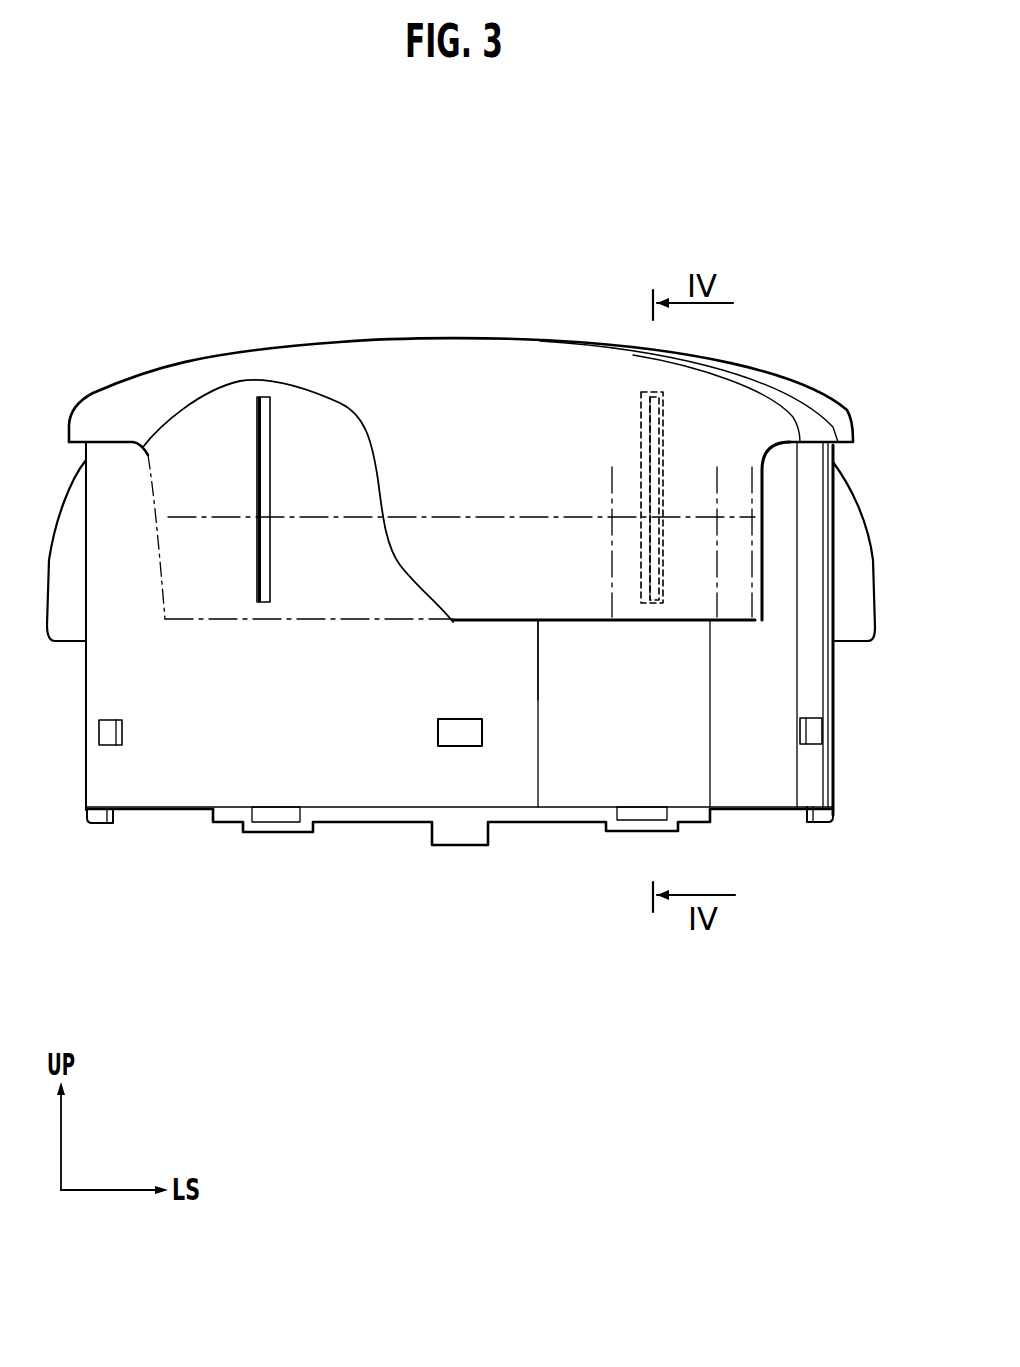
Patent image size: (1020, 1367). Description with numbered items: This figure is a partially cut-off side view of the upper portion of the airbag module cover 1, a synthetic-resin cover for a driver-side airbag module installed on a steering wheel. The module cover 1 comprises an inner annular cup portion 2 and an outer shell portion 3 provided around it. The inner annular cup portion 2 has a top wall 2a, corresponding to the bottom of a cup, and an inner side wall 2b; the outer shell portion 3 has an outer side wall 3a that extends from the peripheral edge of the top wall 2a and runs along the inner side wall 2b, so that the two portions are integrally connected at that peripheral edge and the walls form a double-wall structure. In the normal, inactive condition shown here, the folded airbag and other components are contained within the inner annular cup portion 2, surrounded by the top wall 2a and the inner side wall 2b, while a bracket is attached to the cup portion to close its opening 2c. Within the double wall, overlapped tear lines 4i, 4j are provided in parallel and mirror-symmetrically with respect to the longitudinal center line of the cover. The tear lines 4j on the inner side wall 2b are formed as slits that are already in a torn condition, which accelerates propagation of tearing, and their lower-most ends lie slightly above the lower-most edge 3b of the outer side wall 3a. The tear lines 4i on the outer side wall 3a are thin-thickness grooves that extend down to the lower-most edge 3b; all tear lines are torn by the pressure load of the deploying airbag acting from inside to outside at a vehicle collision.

The airbag module cover 1 is at (570, 170).
The inner annular cup portion 2 is at (840, 698).
The top wall 2a is at (516, 338).
The inner side wall 2b is at (367, 799).
The opening 2c is at (163, 811).
The outer shell portion 3 is at (771, 492).
The outer side wall 3a is at (500, 605).
The lower-most edge 3b is at (568, 622).
The tear line 4i is at (667, 567).
The tear line 4j is at (263, 603).